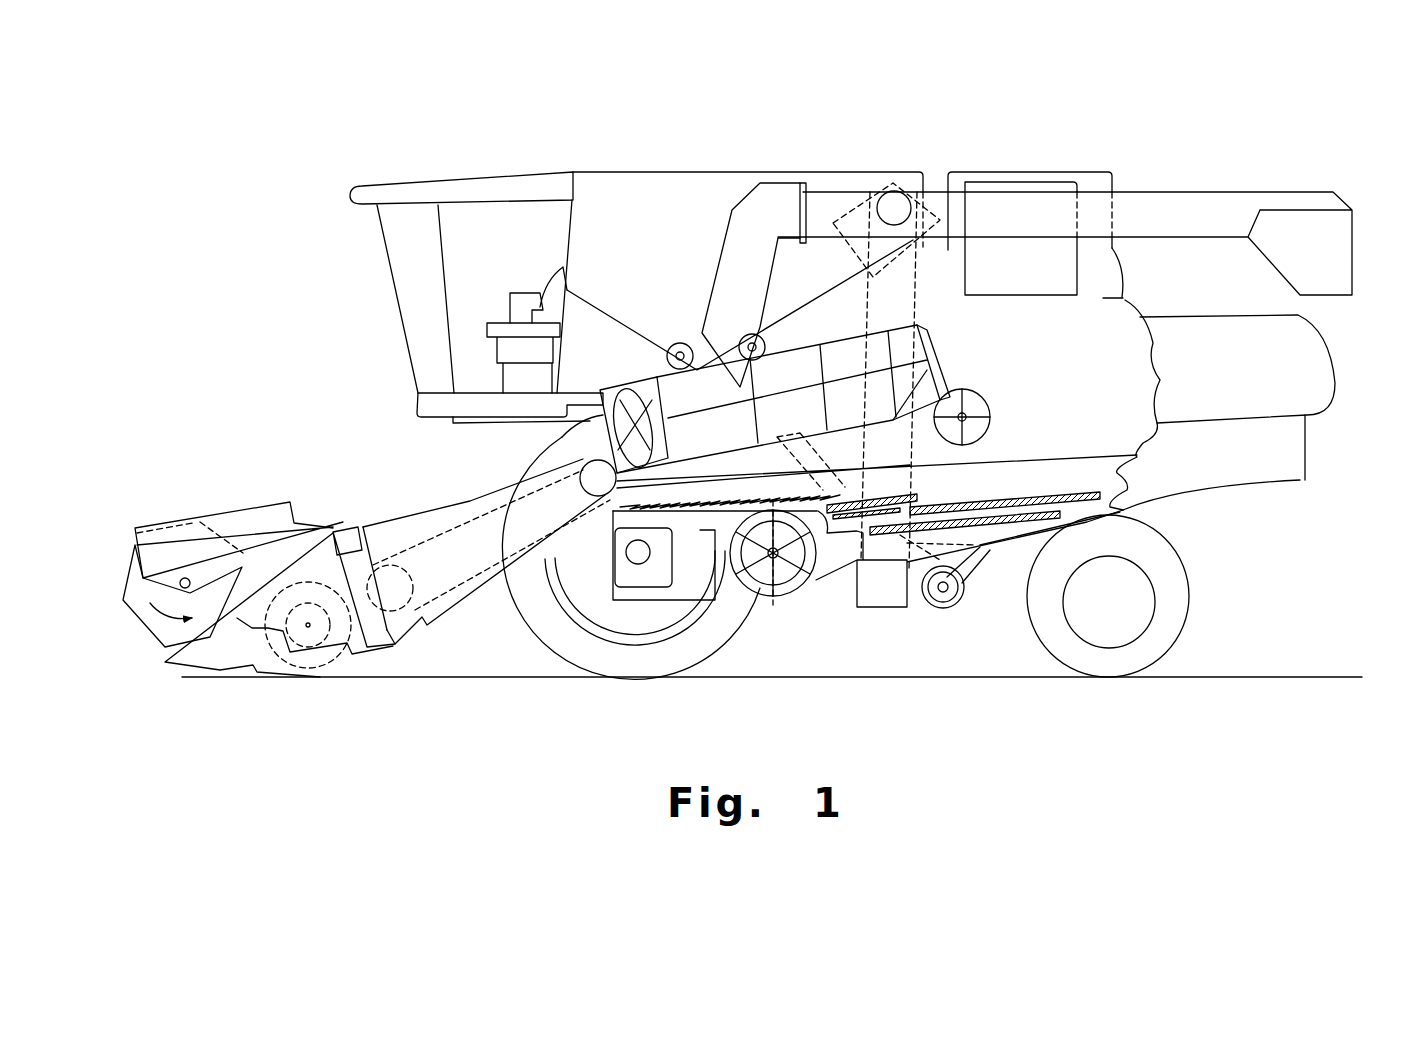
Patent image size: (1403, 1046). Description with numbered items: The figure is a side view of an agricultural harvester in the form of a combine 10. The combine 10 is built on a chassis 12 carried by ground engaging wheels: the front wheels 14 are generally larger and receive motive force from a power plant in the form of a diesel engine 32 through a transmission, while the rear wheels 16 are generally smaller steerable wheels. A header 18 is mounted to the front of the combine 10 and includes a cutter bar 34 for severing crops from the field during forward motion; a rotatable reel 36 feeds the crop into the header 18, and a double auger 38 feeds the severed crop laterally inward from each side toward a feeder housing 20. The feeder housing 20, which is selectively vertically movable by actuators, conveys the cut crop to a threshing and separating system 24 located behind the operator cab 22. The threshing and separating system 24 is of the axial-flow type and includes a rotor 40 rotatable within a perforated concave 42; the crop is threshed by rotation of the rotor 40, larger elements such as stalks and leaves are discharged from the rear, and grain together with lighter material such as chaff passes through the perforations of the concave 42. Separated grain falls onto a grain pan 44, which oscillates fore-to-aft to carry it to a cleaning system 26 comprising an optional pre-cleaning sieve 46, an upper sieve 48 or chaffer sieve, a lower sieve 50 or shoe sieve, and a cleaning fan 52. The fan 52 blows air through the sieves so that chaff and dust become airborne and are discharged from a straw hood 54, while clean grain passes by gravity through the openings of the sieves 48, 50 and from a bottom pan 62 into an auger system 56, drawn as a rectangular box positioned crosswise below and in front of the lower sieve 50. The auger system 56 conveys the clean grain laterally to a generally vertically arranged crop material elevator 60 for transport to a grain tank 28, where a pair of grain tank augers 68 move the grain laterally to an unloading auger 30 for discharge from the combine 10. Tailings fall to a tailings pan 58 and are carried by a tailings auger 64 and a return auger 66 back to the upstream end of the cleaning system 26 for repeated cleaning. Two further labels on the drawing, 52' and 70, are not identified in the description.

The combine 10 is at (456, 155).
The chassis 12 is at (1125, 514).
The front wheels 14 is at (542, 632).
The rear wheels 16 is at (1185, 620).
The header 18 is at (219, 497).
The feeder housing 20 is at (423, 490).
The operator cab 22 is at (395, 277).
The threshing and separating system 24 is at (543, 438).
The cleaning system 26 is at (838, 608).
The grain tank 28 is at (632, 172).
The unloading auger 30 is at (1205, 200).
The diesel engine 32 is at (1010, 182).
The cutter bar 34 is at (253, 667).
The rotatable reel 36 is at (128, 570).
The double auger 38 is at (308, 645).
The rotor 40 is at (627, 397).
The perforated concave 42 is at (813, 377).
The grain pan 44 is at (627, 511).
The pre-cleaning sieve 46 is at (918, 496).
The upper sieve 48 is at (1023, 497).
The lower sieve 50 is at (993, 527).
The cleaning fan 52 is at (773, 593).
The air flow 52' is at (762, 607).
The straw hood 54 is at (1320, 360).
The auger system 56 is at (877, 615).
The tailings pan 58 is at (1022, 530).
The crop material elevator 60 is at (920, 300).
The bottom pan 62 is at (1022, 533).
The tailings auger 64 is at (943, 605).
The return auger 66 is at (856, 480).
The grain tank augers 68 is at (678, 343).
The residue discharge 70 is at (1266, 493).